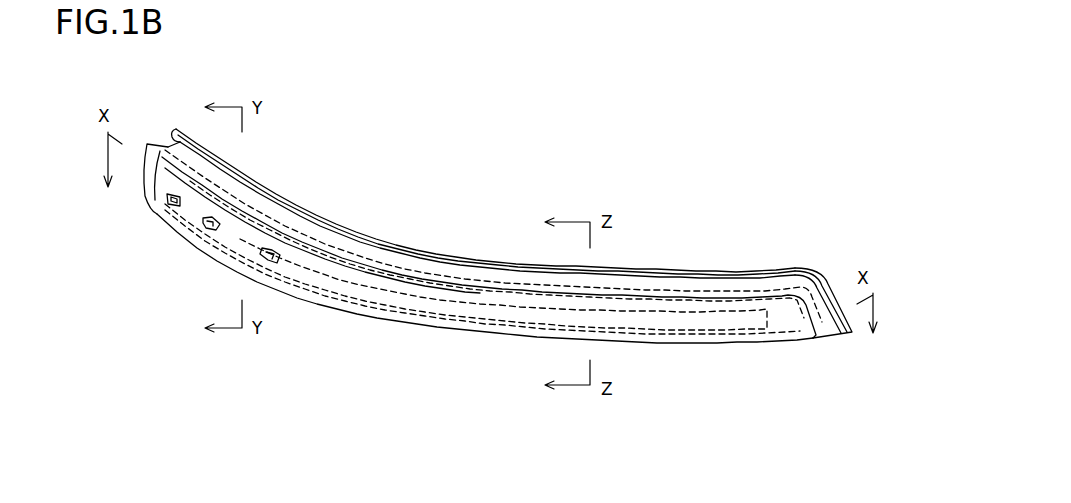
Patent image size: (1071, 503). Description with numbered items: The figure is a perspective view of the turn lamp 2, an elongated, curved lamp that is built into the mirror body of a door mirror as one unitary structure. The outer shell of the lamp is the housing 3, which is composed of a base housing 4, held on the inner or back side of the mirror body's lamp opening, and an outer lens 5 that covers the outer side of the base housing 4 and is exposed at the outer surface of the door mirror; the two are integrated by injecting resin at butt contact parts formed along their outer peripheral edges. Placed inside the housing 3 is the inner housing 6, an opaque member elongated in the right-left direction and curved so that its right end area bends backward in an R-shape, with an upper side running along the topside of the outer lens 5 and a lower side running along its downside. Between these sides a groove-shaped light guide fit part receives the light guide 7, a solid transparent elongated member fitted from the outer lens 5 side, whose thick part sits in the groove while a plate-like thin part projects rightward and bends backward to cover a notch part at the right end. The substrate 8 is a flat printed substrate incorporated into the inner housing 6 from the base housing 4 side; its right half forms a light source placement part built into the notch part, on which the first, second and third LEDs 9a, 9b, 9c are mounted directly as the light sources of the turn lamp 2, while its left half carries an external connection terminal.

The turn lamp 2 is at (429, 181).
The housing 3 is at (766, 262).
The base housing 4 is at (338, 220).
The outer lens 5 is at (677, 317).
The inner housing 6 is at (420, 285).
The light guide 7 is at (493, 310).
The substrate 8 is at (262, 207).
The first LED 9a is at (160, 210).
The second LED 9b is at (180, 250).
The third LED 9c is at (285, 297).